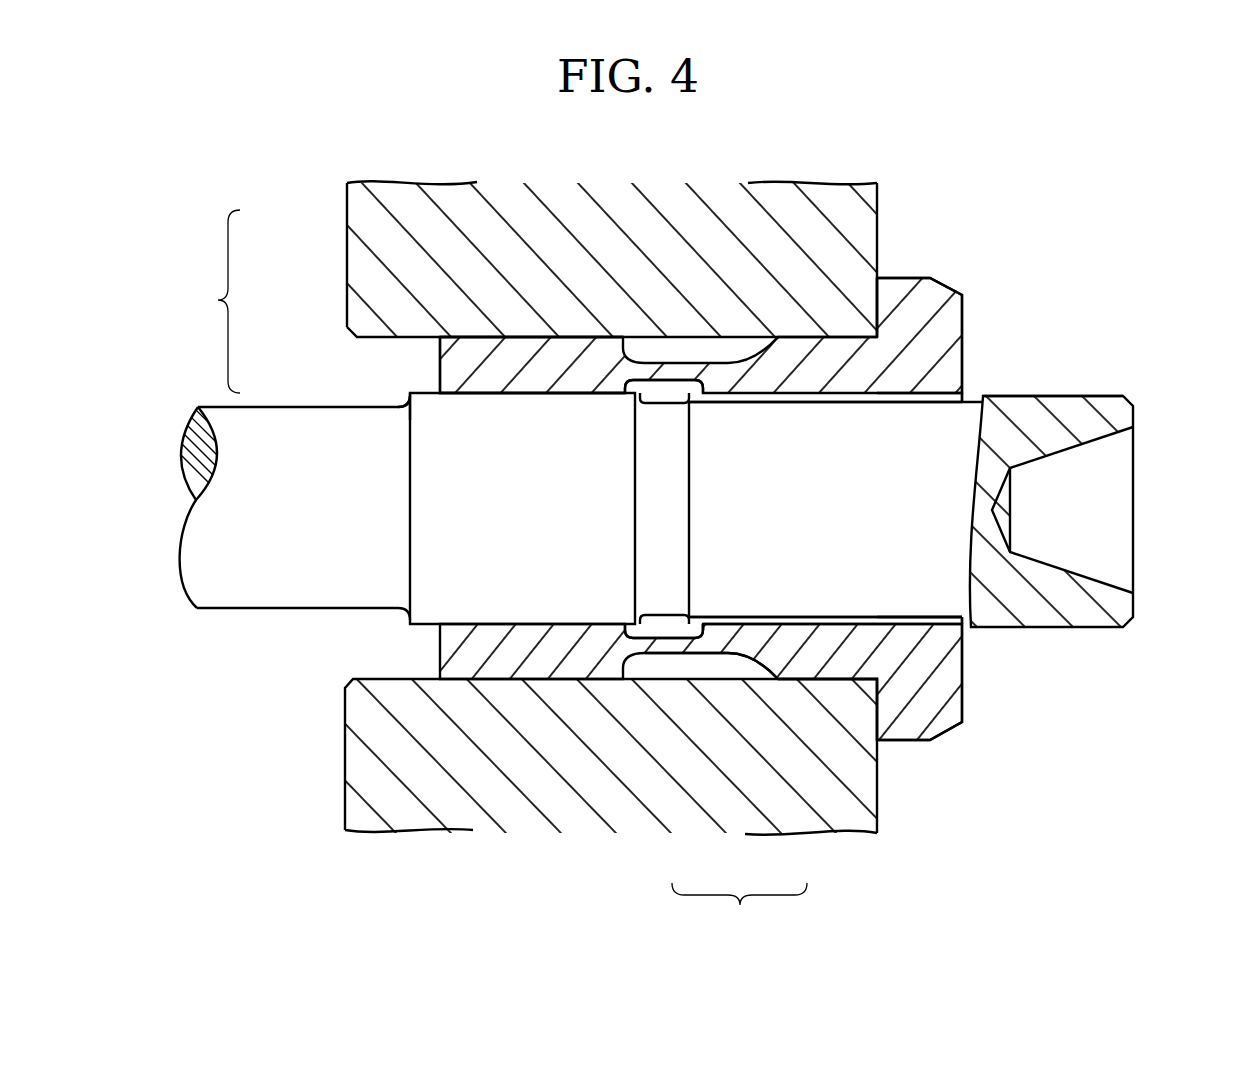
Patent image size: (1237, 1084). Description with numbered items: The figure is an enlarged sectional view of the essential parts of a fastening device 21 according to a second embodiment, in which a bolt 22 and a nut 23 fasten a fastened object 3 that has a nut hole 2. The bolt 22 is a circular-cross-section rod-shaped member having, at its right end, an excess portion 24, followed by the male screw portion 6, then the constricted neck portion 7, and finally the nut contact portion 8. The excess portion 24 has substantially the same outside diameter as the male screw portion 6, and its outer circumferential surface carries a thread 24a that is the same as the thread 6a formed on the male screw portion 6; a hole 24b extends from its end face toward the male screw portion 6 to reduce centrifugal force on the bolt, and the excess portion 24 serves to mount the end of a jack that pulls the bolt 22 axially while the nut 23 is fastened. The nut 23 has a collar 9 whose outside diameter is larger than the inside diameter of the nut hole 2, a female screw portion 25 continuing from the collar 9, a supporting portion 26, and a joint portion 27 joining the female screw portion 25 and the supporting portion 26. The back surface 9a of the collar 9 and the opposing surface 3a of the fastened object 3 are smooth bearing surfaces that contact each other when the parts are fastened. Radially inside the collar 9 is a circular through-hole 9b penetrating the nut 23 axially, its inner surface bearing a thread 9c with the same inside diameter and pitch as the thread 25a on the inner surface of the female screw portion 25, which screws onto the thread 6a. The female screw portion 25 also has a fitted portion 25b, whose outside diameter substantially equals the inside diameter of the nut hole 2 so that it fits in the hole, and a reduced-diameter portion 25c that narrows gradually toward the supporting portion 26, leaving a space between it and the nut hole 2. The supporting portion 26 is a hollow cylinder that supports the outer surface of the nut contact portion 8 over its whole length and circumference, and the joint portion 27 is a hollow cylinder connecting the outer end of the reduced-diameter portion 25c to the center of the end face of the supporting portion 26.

The nut hole 2 is at (410, 655).
The fastened object 3 is at (355, 230).
The surface of the fastened object 3a is at (887, 313).
The male screw portion 6 is at (930, 582).
The thread 6a is at (907, 622).
The constricted neck portion 7 is at (668, 530).
The nut contact portion 8 is at (423, 505).
The collar 9 is at (962, 340).
The back surface of the collar 9a is at (875, 296).
The through-hole 9b is at (932, 395).
The thread 9c is at (863, 395).
The fastening device 21 is at (209, 301).
The bolt 22 is at (278, 430).
The nut 23 is at (415, 363).
The excess portion 24 is at (1072, 603).
The thread 24a is at (1100, 400).
The hole 24b is at (1075, 447).
The female screw portion 25 is at (701, 611).
The thread 25a is at (798, 620).
The fitted portion 25b is at (797, 658).
The reduced-diameter portion 25c is at (717, 642).
The supporting portion 26 is at (548, 378).
The joint portion 27 is at (668, 370).